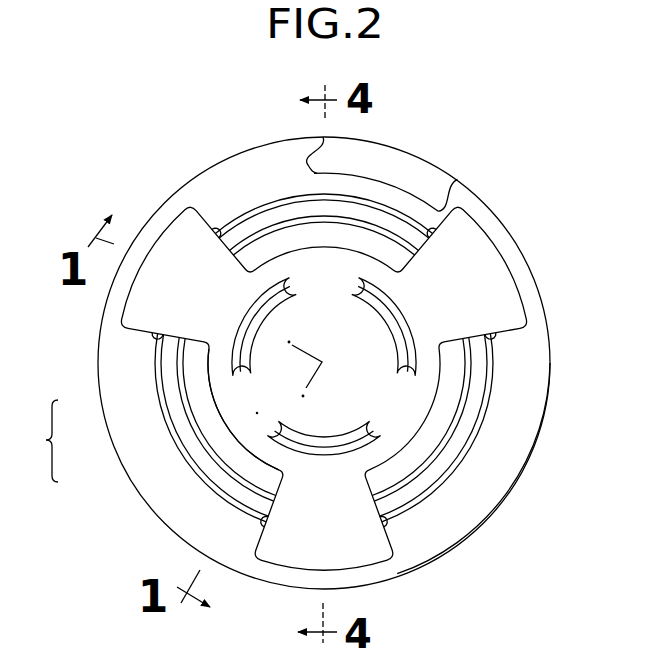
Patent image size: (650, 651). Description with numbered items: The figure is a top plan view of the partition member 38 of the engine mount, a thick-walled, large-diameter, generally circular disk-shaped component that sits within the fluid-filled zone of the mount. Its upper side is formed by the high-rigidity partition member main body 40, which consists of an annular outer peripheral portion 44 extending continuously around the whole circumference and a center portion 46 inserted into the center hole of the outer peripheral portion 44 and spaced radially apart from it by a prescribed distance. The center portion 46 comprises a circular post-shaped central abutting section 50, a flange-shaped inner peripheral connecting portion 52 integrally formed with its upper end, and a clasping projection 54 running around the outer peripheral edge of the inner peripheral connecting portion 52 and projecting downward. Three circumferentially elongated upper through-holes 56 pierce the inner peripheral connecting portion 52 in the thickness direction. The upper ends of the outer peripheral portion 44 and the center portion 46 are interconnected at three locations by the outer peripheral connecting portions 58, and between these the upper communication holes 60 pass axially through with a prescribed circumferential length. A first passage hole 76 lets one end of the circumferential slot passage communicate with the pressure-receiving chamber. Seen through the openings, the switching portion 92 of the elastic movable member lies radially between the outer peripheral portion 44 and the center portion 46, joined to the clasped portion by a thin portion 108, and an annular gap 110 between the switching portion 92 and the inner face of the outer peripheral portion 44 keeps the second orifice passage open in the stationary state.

The partition member 38 is at (510, 172).
The partition member main body 40 is at (551, 303).
The outer peripheral portion 44 is at (460, 510).
The center portion 46 is at (170, 411).
The central abutting section 50 is at (297, 383).
The inner peripheral connecting portion 52 is at (257, 413).
The clasping projection 54 is at (217, 363).
The upper through-holes 56 is at (262, 297).
The outer peripheral connecting portions 58 is at (190, 277).
The upper communication holes 60 is at (233, 228).
The first passage hole 76 is at (447, 190).
The switching portion 92 is at (460, 440).
The thin portion 108 is at (245, 420).
The gap 110 is at (395, 210).